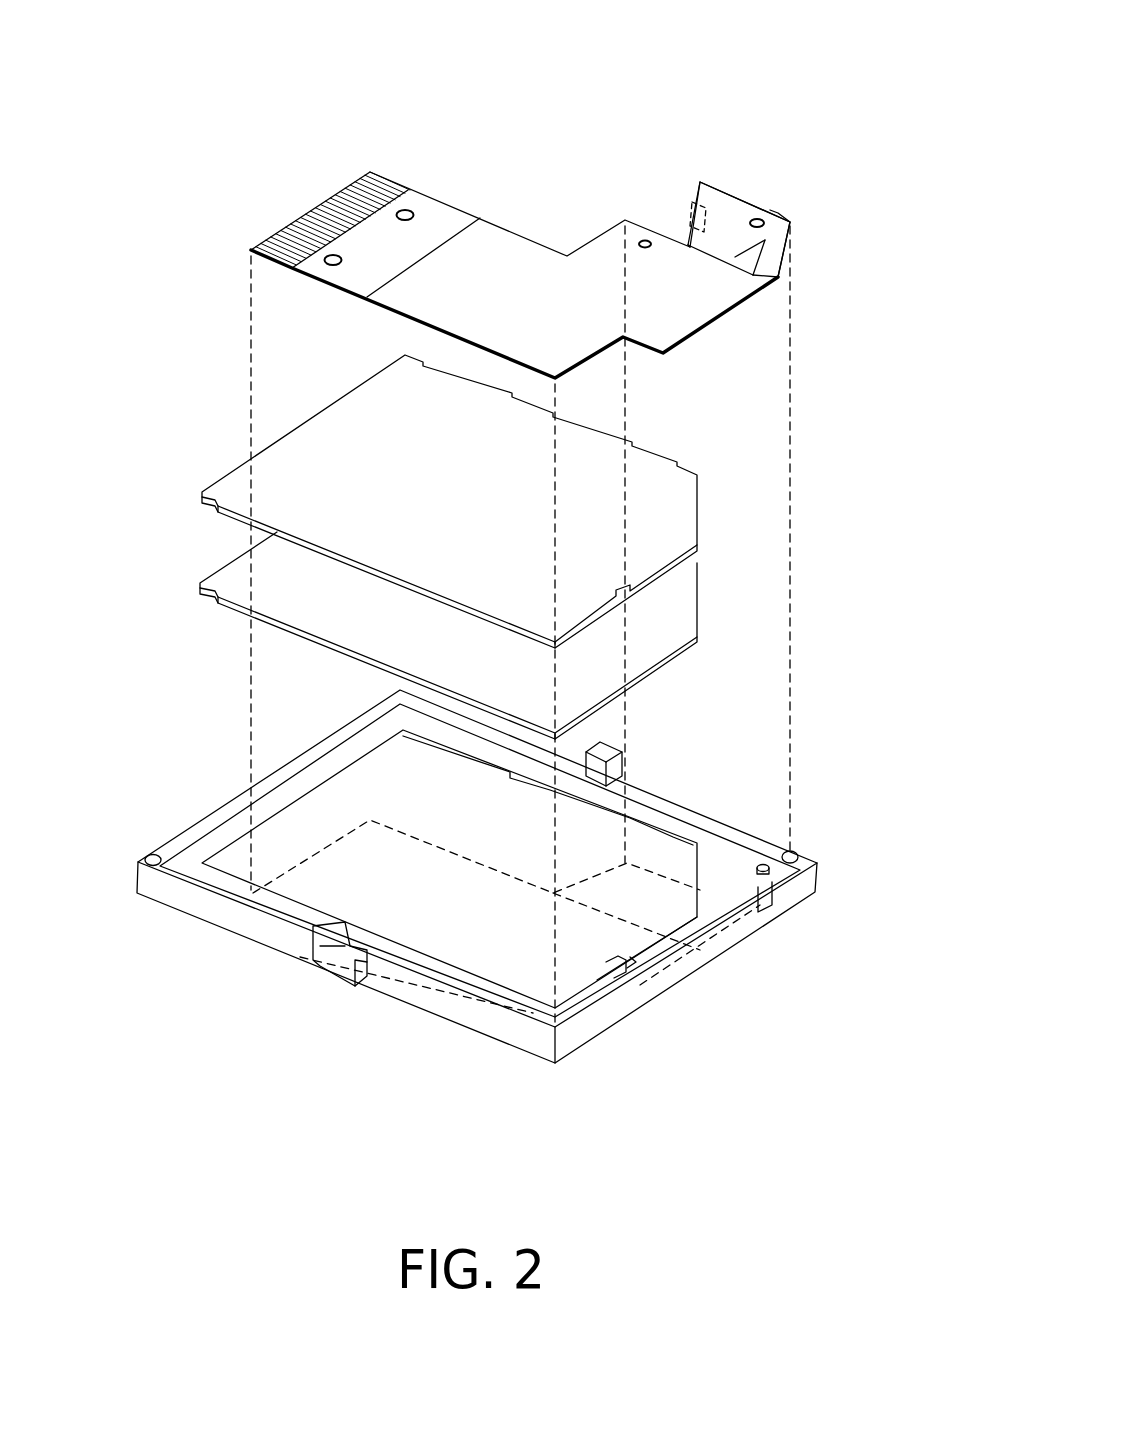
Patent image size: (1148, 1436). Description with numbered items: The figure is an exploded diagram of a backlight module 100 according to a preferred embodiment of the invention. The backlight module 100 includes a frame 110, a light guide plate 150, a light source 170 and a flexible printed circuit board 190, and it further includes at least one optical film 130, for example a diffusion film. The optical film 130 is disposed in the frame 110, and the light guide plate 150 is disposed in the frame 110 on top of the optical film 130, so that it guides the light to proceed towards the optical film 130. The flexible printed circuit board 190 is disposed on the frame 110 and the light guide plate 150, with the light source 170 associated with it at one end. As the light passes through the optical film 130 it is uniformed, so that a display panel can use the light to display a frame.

The backlight module 100 is at (935, 42).
The frame 110 is at (238, 757).
The optical film 130 is at (213, 552).
The light guide plate 150 is at (277, 410).
The light source 170 is at (686, 204).
The flexible printed circuit board 190 is at (297, 195).